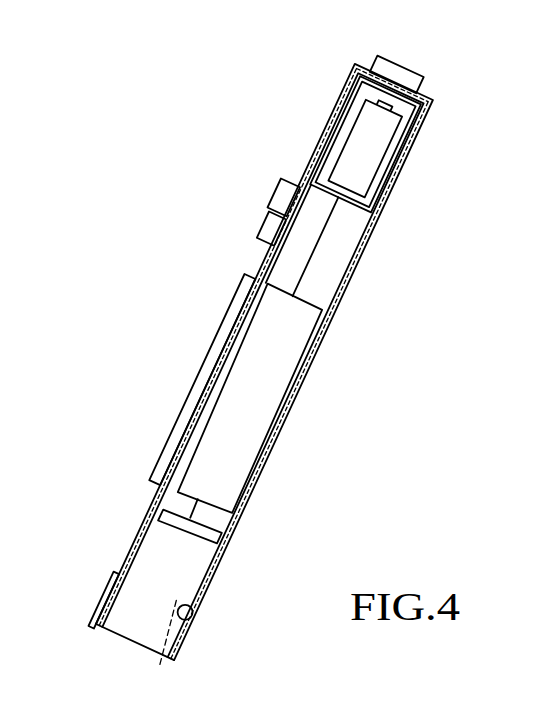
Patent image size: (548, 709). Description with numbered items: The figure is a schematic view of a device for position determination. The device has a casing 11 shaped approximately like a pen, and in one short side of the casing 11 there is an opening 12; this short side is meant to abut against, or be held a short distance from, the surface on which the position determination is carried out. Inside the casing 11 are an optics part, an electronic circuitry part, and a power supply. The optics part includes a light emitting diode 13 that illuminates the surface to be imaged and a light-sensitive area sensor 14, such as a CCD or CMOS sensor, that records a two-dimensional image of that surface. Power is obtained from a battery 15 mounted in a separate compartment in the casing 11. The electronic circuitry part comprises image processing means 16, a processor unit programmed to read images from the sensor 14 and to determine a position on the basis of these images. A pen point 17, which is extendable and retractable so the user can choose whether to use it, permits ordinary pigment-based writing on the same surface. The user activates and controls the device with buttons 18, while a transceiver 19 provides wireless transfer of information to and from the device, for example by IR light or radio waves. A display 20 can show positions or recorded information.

The casing 11 is at (340, 322).
The opening 12 is at (133, 643).
The light emitting diode 13 is at (193, 614).
The light-sensitive area sensor 14 is at (208, 530).
The battery 15 is at (372, 155).
The image processing means 16 is at (258, 418).
The pen point 17 is at (105, 592).
The buttons 18 is at (273, 232).
The transceiver 19 is at (398, 67).
The display 20 is at (207, 370).